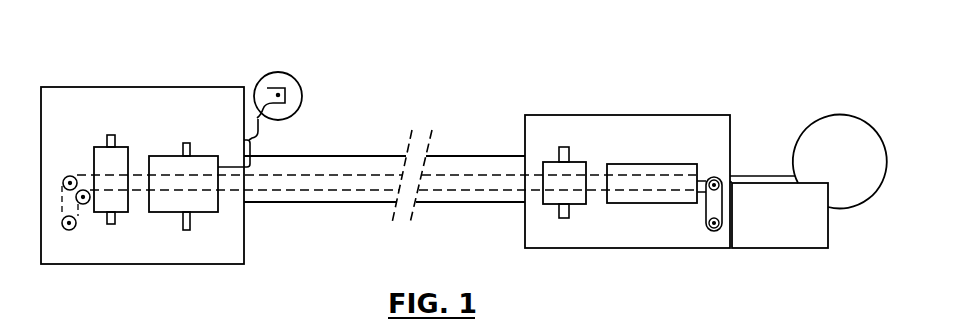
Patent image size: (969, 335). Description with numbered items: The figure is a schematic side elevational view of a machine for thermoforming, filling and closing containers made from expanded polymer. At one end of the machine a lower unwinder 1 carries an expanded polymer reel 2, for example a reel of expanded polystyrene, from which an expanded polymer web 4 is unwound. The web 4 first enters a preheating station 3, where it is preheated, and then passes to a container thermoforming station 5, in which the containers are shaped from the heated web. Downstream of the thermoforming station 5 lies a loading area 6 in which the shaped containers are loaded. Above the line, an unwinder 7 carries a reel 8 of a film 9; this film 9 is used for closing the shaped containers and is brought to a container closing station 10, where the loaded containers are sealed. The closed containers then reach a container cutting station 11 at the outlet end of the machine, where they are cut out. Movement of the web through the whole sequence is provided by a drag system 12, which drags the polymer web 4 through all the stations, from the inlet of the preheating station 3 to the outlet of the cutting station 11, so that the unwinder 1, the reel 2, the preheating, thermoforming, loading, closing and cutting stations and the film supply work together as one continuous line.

The lower unwinder 1 is at (767, 222).
The expanded polymer reel 2 is at (832, 133).
The preheating station 3 is at (633, 168).
The expanded polymer web 4 is at (752, 176).
The container thermoforming station 5 is at (573, 168).
The loading area 6 is at (457, 128).
The unwinder 7 is at (269, 94).
The reel 8 is at (293, 99).
The film 9 is at (251, 148).
The container closing station 10 is at (198, 163).
The container cutting station 11 is at (122, 157).
The drag system 12 is at (62, 212).